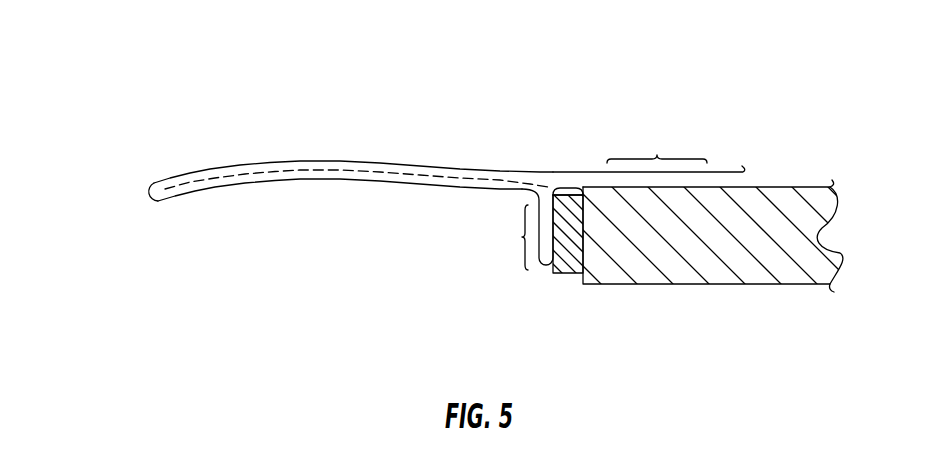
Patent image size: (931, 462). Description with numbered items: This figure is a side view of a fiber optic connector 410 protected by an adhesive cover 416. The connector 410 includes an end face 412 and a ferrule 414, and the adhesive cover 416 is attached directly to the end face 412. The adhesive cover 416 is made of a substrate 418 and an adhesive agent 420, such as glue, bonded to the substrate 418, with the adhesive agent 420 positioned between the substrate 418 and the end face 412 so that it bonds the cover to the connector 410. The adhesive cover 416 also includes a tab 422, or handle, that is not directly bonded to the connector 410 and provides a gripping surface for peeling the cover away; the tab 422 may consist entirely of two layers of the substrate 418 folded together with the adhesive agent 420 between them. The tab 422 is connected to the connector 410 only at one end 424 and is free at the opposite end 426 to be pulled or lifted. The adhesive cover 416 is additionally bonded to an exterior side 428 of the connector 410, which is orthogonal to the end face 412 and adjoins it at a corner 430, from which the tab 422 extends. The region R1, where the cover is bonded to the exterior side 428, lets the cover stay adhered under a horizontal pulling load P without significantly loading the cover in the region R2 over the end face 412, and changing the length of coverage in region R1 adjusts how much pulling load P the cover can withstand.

The connector 410 is at (335, 63).
The end face 412 is at (654, 249).
The ferrule 414 is at (565, 272).
The adhesive cover 416 is at (540, 217).
The substrate 418 is at (508, 170).
The adhesive agent 420 is at (455, 170).
The tab 422 is at (275, 167).
The one end of the tab 424 is at (444, 211).
The opposite end of the tab 426 is at (147, 235).
The exterior side 428 is at (653, 132).
The corner 430 is at (572, 190).
The region R1 is at (657, 142).
The region R2 is at (514, 237).
The pulling load P is at (92, 185).